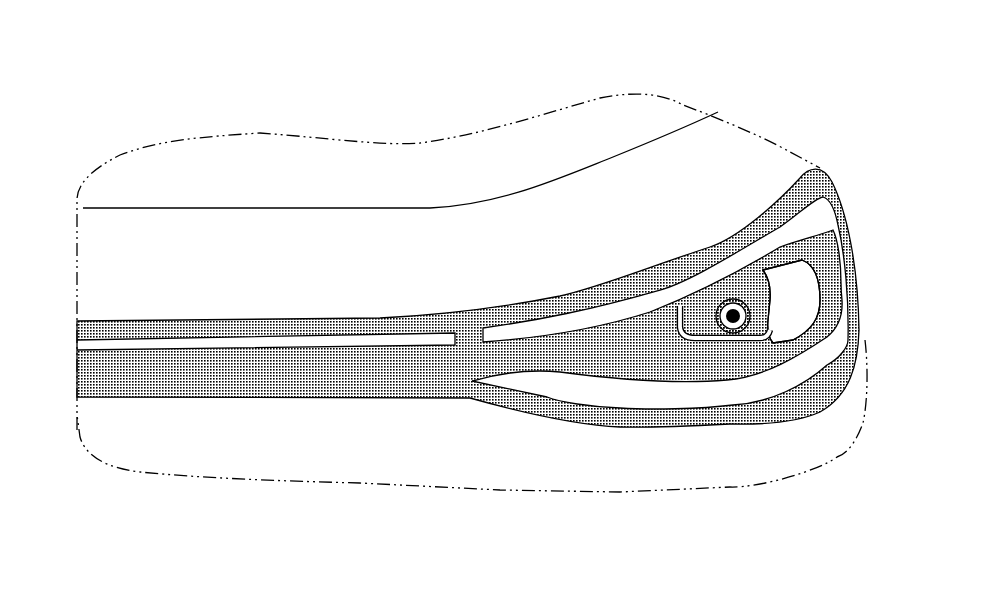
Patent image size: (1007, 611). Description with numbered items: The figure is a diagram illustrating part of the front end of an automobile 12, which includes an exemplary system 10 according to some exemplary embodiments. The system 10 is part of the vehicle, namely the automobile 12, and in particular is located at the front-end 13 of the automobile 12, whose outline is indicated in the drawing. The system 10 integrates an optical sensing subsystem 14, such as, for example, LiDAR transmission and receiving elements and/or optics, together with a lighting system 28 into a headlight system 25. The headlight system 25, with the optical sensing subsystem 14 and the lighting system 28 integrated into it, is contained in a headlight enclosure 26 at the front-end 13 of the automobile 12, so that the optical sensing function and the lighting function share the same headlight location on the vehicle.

The system 10 is at (363, 55).
The automobile 12 is at (316, 208).
The front-end 13 is at (797, 420).
The optical sensing subsystem 14 is at (716, 310).
The headlight system 25 is at (793, 295).
The headlight enclosure 26 is at (818, 287).
The lighting system 28 is at (728, 300).